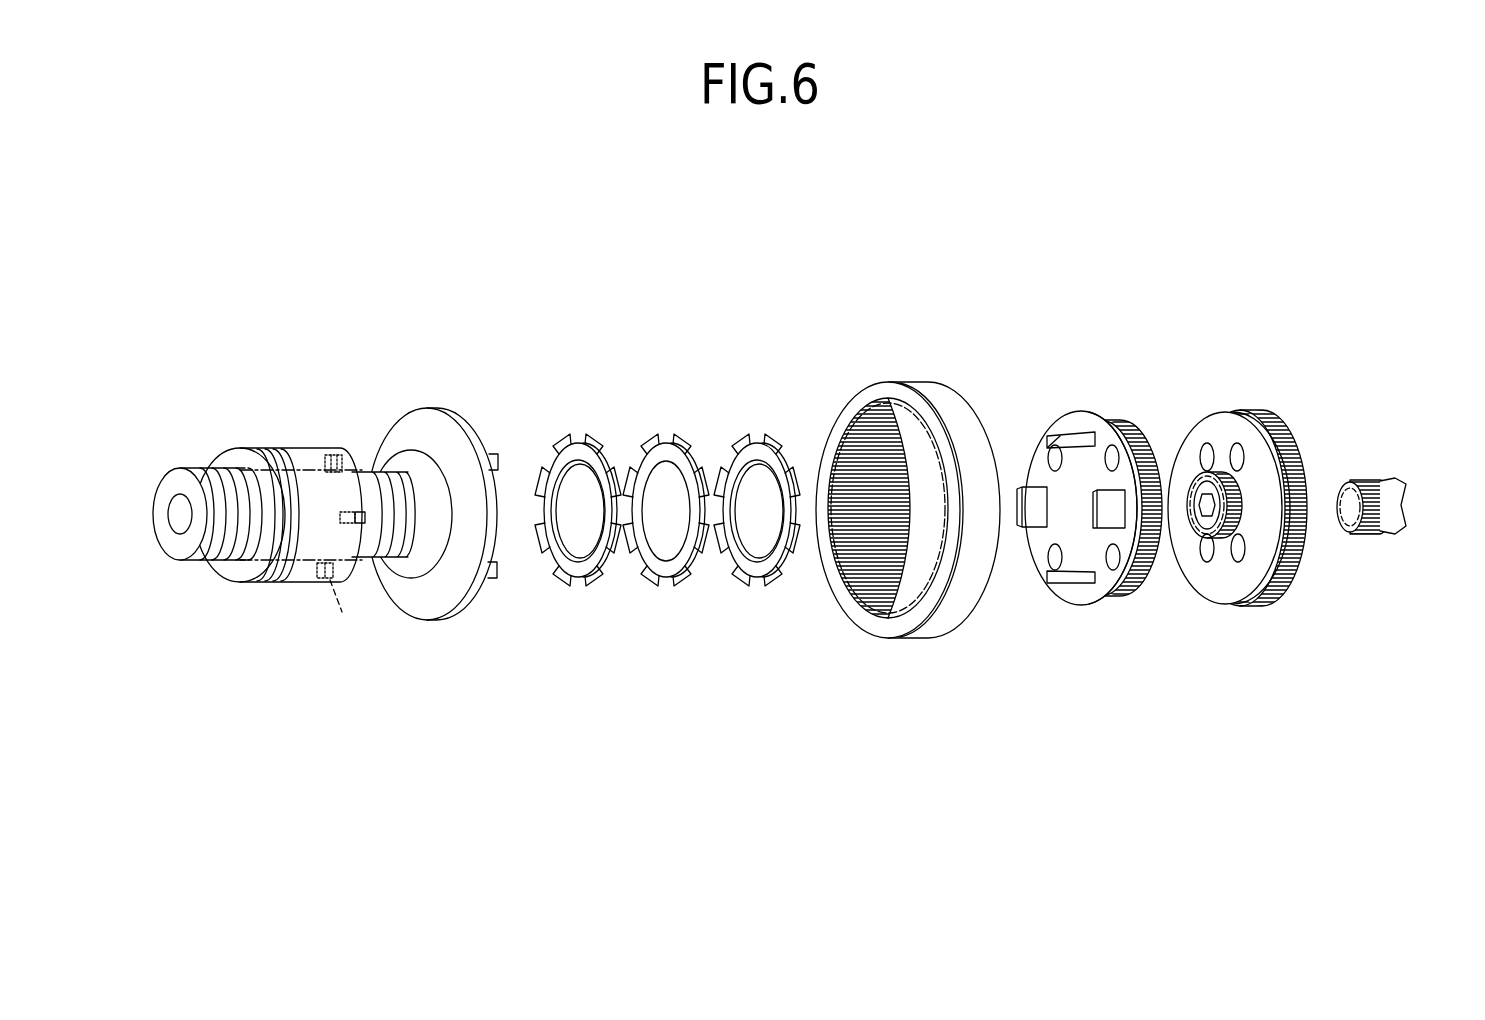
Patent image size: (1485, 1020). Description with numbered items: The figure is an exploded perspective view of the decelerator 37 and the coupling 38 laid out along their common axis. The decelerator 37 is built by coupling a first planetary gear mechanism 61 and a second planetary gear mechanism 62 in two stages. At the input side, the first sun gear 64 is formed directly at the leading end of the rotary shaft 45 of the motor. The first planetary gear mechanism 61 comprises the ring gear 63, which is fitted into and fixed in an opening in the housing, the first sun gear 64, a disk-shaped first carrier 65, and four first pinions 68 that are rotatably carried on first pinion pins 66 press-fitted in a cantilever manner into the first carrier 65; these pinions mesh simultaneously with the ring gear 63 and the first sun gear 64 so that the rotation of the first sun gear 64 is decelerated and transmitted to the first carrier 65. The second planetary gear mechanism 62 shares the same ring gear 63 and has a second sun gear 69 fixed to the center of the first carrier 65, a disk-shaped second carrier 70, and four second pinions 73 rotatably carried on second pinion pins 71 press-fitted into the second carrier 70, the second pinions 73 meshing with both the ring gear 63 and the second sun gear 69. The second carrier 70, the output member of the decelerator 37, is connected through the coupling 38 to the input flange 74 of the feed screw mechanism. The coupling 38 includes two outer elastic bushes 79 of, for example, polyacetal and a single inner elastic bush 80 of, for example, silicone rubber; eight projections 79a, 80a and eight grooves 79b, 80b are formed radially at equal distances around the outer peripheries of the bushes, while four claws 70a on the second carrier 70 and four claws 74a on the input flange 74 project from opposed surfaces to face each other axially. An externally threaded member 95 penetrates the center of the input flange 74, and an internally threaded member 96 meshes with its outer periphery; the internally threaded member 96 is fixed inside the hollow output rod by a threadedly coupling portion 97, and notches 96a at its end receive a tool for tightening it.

The decelerator 37 is at (1023, 460).
The coupling 38 is at (673, 435).
The rotary shaft 45 is at (1402, 486).
The first planetary gear mechanism 61 is at (1275, 504).
The second planetary gear mechanism 62 is at (1049, 476).
The ring gear 63 is at (923, 390).
The first sun gear 64 is at (1360, 480).
The first carrier 65 is at (1238, 588).
The first pinion pins 66 is at (1237, 443).
The first pinions 68 is at (1288, 425).
The second sun gear 69 is at (1230, 502).
The second carrier 70 is at (1020, 476).
The claws 70a is at (1063, 434).
The second pinion pins 71 is at (1050, 450).
The second pinions 73 is at (1150, 442).
The input flange 74 is at (429, 498).
The claws 74a is at (494, 456).
The outer elastic bushes 79 is at (673, 483).
The projections 79a is at (556, 448).
The grooves 79b is at (594, 442).
The inner elastic bush 80 is at (683, 485).
The projections 80a is at (656, 440).
The grooves 80b is at (690, 446).
The externally threaded member 95 is at (202, 466).
The internally threaded member 96 is at (305, 537).
The notches 96a is at (337, 452).
The threadedly coupling portion 97 is at (262, 578).